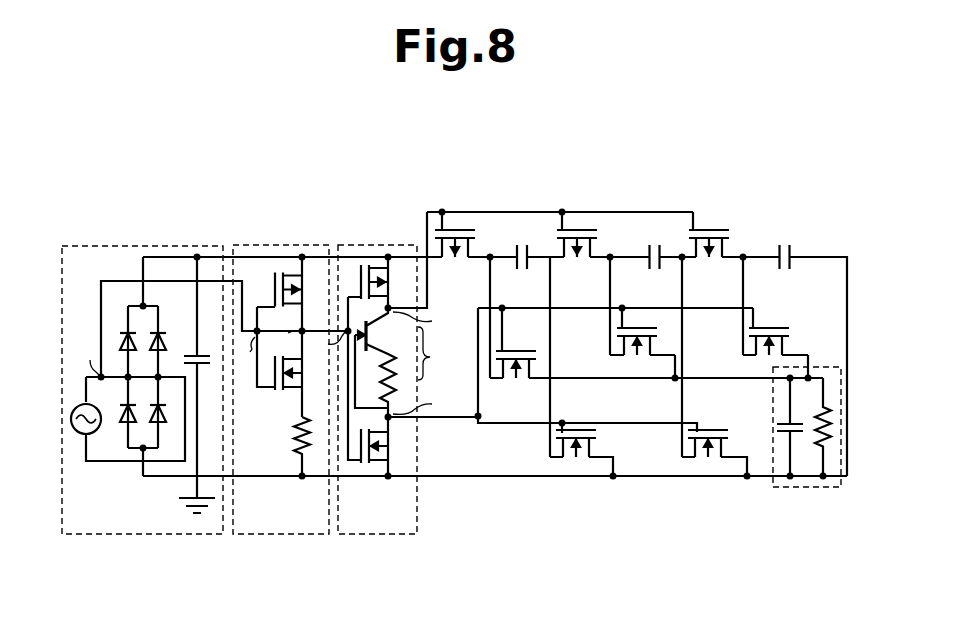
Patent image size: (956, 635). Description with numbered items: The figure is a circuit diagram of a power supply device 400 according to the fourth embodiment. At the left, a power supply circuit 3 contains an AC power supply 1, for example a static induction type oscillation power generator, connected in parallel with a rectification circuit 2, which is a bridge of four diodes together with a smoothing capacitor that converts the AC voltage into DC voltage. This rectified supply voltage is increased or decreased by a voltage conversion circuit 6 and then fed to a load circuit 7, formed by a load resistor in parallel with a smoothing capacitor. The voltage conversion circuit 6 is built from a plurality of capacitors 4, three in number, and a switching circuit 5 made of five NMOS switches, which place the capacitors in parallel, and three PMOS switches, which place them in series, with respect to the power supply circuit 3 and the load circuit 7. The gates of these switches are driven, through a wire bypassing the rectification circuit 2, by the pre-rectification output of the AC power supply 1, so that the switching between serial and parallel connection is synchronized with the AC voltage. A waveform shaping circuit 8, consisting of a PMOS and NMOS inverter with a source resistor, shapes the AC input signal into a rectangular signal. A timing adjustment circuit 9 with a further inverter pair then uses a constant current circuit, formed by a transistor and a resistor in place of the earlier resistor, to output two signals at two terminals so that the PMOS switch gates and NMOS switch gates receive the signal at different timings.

The power supply device 400 is at (806, 140).
The AC power supply 1 is at (71, 437).
The rectification circuit 2 is at (222, 243).
The power supply circuit 3 is at (142, 535).
The capacitors 4 is at (612, 175).
The switching circuit 5 is at (427, 195).
The voltage conversion circuit 6 is at (797, 160).
The load circuit 7 is at (807, 488).
The waveform shaping circuit 8 is at (278, 535).
The timing adjustment circuit 9 is at (378, 535).